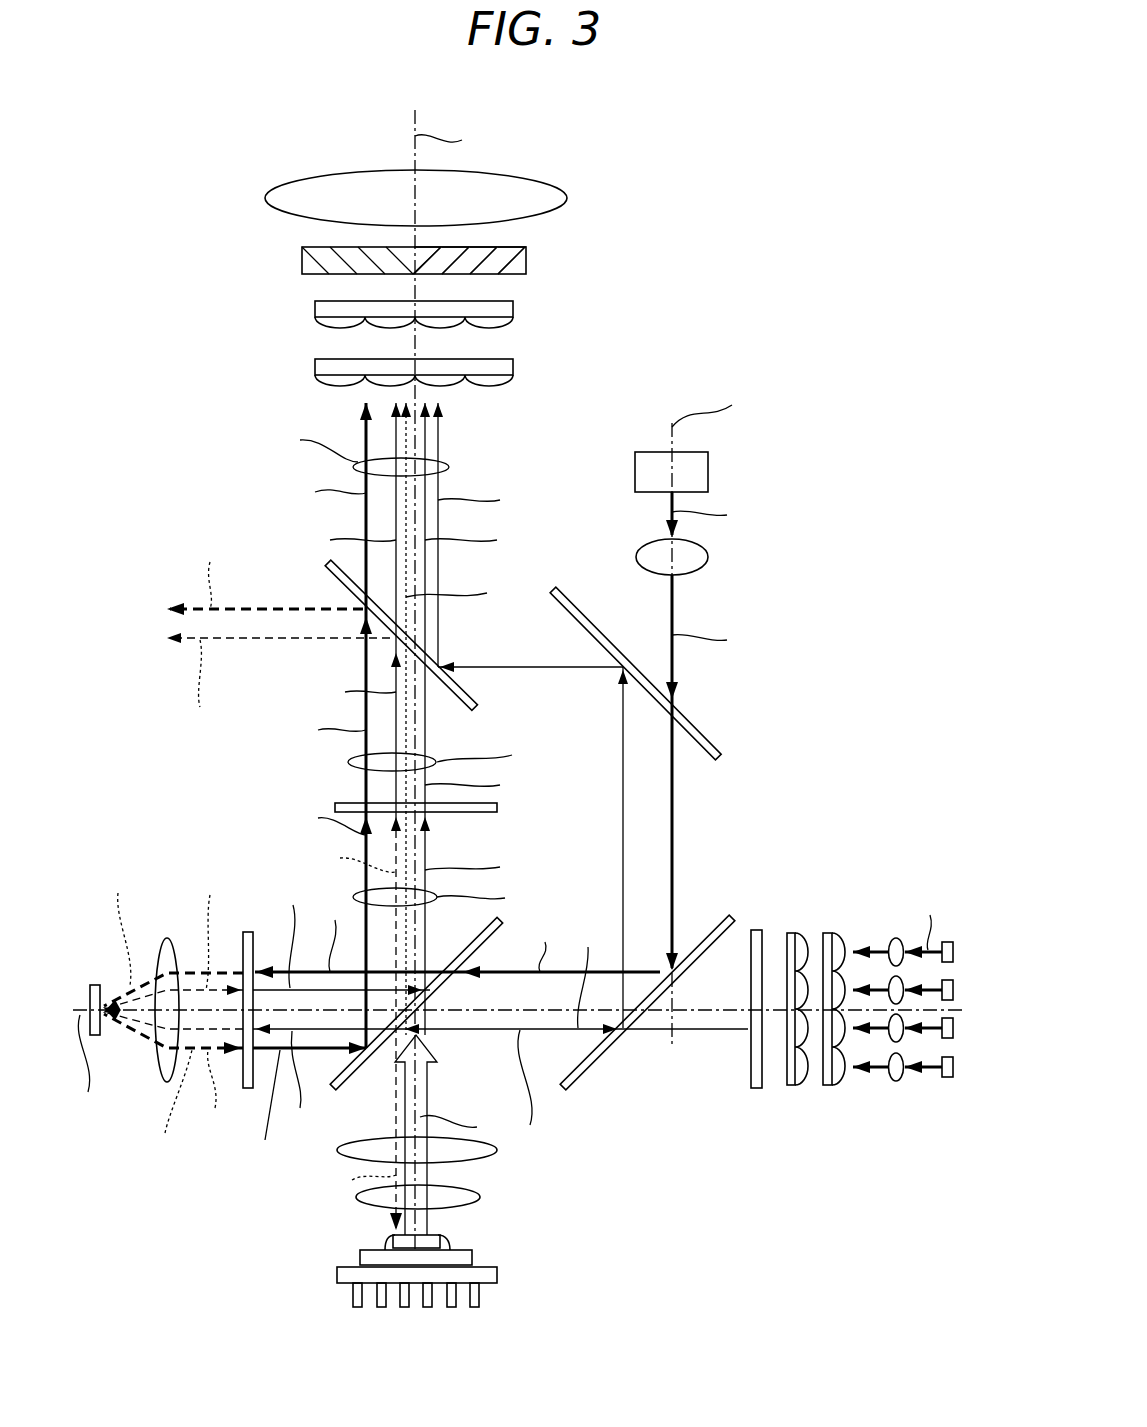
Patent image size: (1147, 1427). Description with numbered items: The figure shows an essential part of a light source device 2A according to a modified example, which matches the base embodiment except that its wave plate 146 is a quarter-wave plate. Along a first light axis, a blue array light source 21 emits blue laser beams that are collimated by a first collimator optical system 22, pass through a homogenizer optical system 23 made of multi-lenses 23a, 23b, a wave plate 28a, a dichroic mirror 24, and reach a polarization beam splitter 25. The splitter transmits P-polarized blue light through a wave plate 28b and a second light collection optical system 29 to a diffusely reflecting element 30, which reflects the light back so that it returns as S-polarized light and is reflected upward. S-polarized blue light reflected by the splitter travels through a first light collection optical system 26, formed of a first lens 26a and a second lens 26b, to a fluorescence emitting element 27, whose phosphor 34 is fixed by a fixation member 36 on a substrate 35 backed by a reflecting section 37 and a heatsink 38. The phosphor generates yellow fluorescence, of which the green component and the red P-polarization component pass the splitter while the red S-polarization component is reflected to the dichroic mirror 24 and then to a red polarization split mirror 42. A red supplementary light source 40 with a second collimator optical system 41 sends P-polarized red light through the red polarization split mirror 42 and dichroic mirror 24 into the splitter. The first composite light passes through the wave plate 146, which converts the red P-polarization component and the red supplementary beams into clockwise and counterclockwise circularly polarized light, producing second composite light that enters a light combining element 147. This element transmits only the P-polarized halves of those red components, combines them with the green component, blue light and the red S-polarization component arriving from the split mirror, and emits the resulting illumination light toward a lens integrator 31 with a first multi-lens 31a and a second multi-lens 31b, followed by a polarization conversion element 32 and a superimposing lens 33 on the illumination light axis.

The light source device 2A is at (812, 163).
The blue array light source 21 is at (950, 938).
The first collimator optical system 22 is at (896, 935).
The homogenizer optical system 23 is at (831, 1065).
The multi-lens 23a is at (845, 1082).
The multi-lens 23b is at (806, 1086).
The dichroic mirror 24 is at (730, 918).
The polarization beam splitter 25 is at (350, 1080).
The first light collection optical system 26 is at (486, 1186).
The first lens 26a is at (490, 1160).
The second lens 26b is at (470, 1205).
The fluorescence emitting element 27 is at (438, 1266).
The wave plate 28a is at (756, 1088).
The wave plate 28b is at (248, 932).
The second light collection optical system 29 is at (158, 940).
The diffusely reflecting element 30 is at (95, 985).
The lens integrator 31 is at (496, 336).
The first multi-lens 31a is at (513, 362).
The second multi-lens 31b is at (513, 308).
The polarization conversion element 32 is at (526, 262).
The superimposing lens 33 is at (532, 180).
The phosphor 34 is at (393, 1240).
The substrate 35 is at (360, 1258).
The fixation member 36 is at (450, 1245).
The reflecting section 37 is at (430, 1250).
The heatsink 38 is at (337, 1275).
The red supplementary light source 40 is at (708, 470).
The second collimator optical system 41 is at (708, 562).
The red polarization split mirror 42 is at (718, 752).
The wave plate 146 is at (497, 808).
The light combining element 147 is at (470, 700).